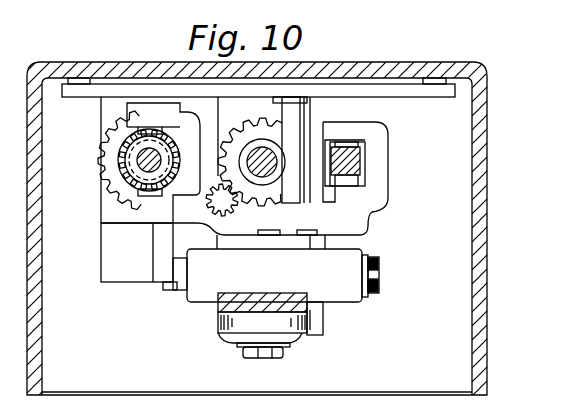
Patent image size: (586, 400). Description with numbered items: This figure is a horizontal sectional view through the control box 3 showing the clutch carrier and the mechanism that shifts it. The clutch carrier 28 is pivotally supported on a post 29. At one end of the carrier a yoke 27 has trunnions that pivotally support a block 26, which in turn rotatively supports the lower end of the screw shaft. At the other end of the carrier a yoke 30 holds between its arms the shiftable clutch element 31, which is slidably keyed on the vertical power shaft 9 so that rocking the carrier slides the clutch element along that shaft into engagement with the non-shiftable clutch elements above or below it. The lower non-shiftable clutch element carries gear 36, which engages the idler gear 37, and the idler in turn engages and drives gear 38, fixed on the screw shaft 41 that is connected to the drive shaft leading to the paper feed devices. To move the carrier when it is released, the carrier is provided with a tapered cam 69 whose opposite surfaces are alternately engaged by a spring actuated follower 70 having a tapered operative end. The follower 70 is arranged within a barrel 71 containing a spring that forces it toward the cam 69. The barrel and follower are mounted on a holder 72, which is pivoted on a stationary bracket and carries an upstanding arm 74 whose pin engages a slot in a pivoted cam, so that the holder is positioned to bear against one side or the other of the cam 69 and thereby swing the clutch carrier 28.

The control box 3 is at (480, 185).
The vertical shaft 9 is at (143, 163).
The block 26 is at (362, 161).
The yoke 27 is at (367, 138).
The clutch carrier 28 is at (350, 225).
The post 29 is at (289, 188).
The yoke 30 is at (137, 110).
The shiftable clutch element 31 is at (119, 156).
The gear 36 is at (112, 182).
The idler gear 37 is at (216, 202).
The gear 38 is at (245, 139).
The screw shaft 41 is at (262, 152).
The tapered cam 69 is at (162, 250).
The spring actuated follower 70 is at (175, 283).
The barrel 71 is at (343, 292).
The holder 72 is at (284, 342).
The upstanding arm 74 is at (245, 300).